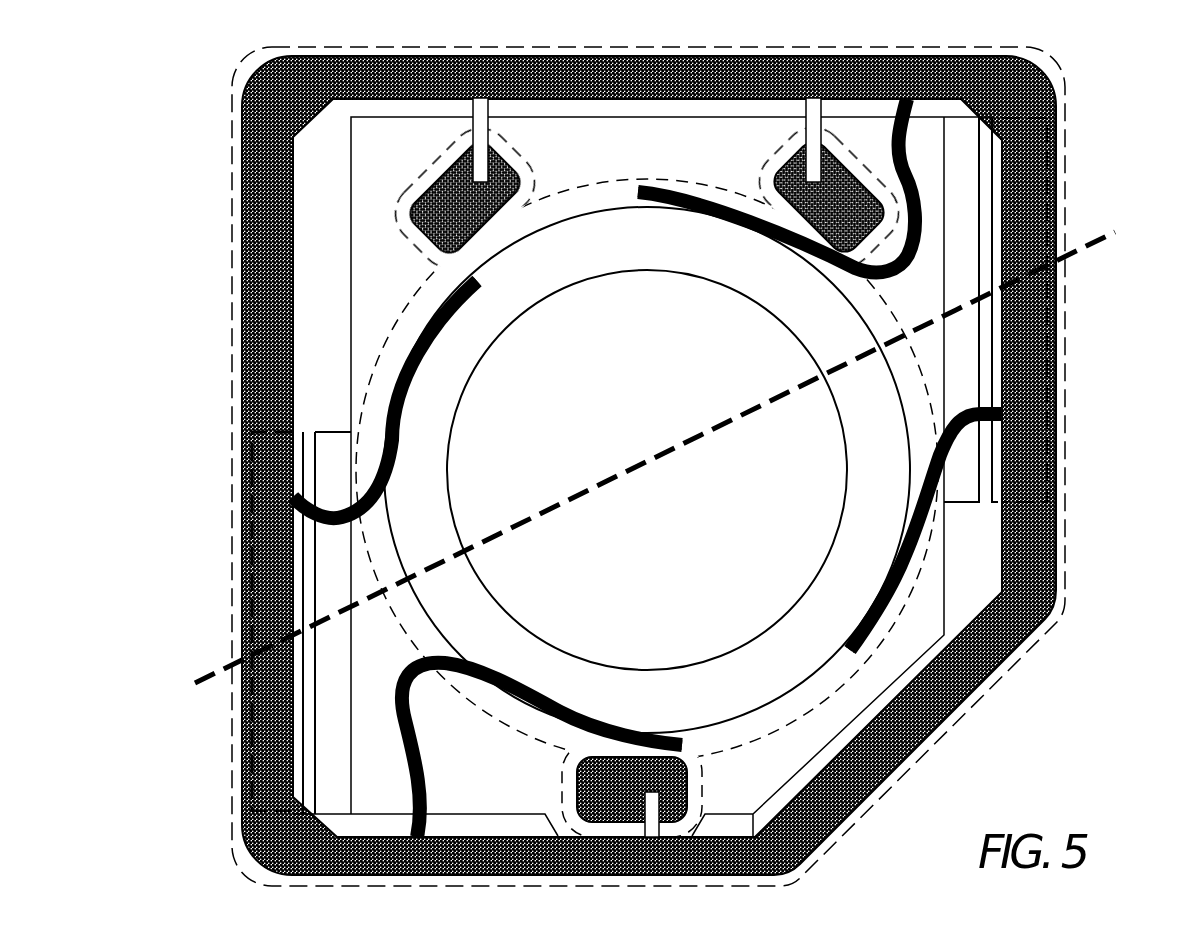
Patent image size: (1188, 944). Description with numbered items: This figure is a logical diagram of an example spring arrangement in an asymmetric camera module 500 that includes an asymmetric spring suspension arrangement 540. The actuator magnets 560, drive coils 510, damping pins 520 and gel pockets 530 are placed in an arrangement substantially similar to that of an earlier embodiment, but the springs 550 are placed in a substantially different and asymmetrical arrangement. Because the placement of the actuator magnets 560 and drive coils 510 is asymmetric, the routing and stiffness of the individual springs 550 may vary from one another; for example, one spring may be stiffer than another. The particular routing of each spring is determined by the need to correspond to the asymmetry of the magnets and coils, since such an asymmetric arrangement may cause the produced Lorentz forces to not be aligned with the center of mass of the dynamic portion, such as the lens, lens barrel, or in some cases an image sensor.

The asymmetric camera module 500 is at (1098, 127).
The drive coils 510 is at (957, 395).
The damping pins 520 is at (478, 97).
The gel pockets 530 is at (480, 222).
The asymmetric spring suspension arrangement 540 is at (990, 660).
The springs 550 is at (887, 585).
The actuator magnets 560 is at (270, 542).